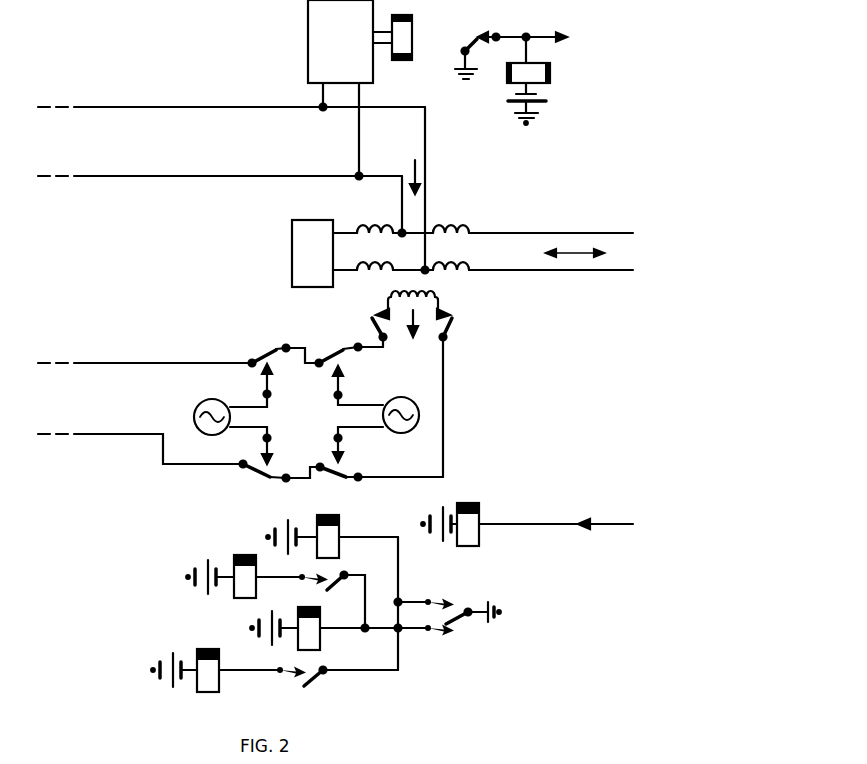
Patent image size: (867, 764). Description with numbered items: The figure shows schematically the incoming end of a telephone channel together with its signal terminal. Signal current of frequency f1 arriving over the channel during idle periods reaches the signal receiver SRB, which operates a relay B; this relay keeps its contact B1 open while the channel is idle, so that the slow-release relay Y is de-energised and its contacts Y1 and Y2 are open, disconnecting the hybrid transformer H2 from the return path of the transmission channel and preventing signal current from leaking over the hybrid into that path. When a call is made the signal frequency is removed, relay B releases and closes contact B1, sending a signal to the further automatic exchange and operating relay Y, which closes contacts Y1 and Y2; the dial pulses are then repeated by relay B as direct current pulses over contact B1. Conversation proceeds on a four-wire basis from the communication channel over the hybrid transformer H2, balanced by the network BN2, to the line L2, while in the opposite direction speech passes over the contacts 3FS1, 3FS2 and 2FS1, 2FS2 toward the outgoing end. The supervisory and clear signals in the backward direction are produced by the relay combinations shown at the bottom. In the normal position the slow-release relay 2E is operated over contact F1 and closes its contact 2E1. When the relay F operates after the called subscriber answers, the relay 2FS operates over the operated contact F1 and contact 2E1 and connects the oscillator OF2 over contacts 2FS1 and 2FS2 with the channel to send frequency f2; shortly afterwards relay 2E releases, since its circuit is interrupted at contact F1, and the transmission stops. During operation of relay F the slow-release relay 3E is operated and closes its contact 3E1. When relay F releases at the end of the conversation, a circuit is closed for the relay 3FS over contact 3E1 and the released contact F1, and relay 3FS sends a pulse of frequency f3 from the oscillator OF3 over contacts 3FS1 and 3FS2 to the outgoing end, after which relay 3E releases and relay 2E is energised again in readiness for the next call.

The signal receiver SRB is at (340, 88).
The relay B is at (400, 32).
The contact B1 is at (511, 43).
The slow-release relay Y is at (535, 79).
The network BN2 is at (342, 253).
The hybrid transformer H2 is at (436, 255).
The line L2 is at (551, 251).
The contact Y1 is at (366, 326).
The contact Y2 is at (460, 326).
The contact 2FS1 is at (251, 350).
The contact 3FS1 is at (352, 361).
The oscillator OF2 is at (219, 414).
The oscillator OF3 is at (381, 414).
The contact 2FS2 is at (249, 479).
The contact 3FS2 is at (355, 465).
The slow-release relay 3E is at (332, 531).
The relay F is at (527, 519).
The relay 3FS is at (244, 567).
The contact 3E1 is at (328, 600).
The slow-release relay 2E is at (339, 624).
The contact F1 is at (463, 622).
The relay 2FS is at (215, 667).
The contact 2E1 is at (329, 684).